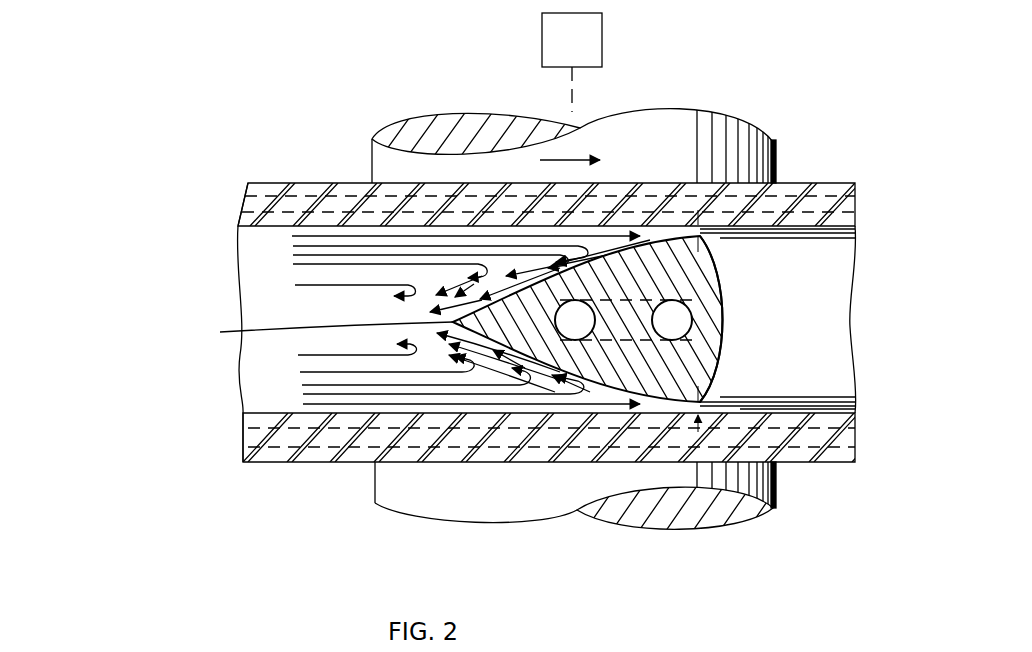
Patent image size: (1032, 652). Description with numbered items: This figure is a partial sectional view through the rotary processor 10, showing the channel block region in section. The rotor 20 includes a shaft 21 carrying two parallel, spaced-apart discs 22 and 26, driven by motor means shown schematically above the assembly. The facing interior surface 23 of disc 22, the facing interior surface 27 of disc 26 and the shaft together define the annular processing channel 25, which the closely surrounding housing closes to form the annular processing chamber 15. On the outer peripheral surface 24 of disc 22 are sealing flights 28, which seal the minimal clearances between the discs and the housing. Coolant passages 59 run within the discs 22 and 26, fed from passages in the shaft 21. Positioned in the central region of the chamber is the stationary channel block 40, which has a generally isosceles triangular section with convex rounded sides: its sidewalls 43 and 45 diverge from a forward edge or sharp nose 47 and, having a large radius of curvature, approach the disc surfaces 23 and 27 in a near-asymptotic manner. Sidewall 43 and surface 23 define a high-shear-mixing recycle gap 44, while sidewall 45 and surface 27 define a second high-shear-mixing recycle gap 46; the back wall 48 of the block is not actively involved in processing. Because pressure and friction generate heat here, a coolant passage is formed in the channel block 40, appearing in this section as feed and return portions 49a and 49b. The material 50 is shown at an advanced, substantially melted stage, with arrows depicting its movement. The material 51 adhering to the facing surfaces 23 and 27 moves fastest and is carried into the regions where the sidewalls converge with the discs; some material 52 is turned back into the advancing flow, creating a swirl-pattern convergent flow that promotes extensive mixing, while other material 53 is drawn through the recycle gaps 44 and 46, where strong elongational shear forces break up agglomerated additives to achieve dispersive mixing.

The rotary processor 10 is at (703, 70).
The annular processing chamber 15 is at (872, 323).
The rotor 20 is at (779, 138).
The shaft 21 is at (655, 122).
The disc 22 is at (823, 190).
The facing interior surface of disc 22 23 is at (858, 236).
The peripheral surface of disc 22 24 is at (457, 209).
The annular processing channel 25 is at (803, 410).
The disc 26 is at (818, 448).
The facing interior surface of disc 26 27 is at (850, 410).
The sealing flights 28 is at (310, 200).
The channel block 40 is at (740, 312).
The sidewall 43 is at (652, 232).
The high-shear-mixing recycle gap 44 is at (770, 185).
The sidewall 45 is at (666, 400).
The high-shear-mixing recycle gap 46 is at (770, 447).
The forward edge or sharp nose 47 is at (321, 332).
The back wall 48 is at (723, 342).
The coolant passage feed portion 49a is at (589, 306).
The coolant passage return portion 49b is at (686, 306).
The material 50 is at (235, 265).
The material adjacent facing surfaces 51 is at (256, 243).
The turned-back material 52 is at (522, 257).
The material carried through recycle gaps 53 is at (760, 229).
The coolant passages in the discs 59 is at (820, 200).